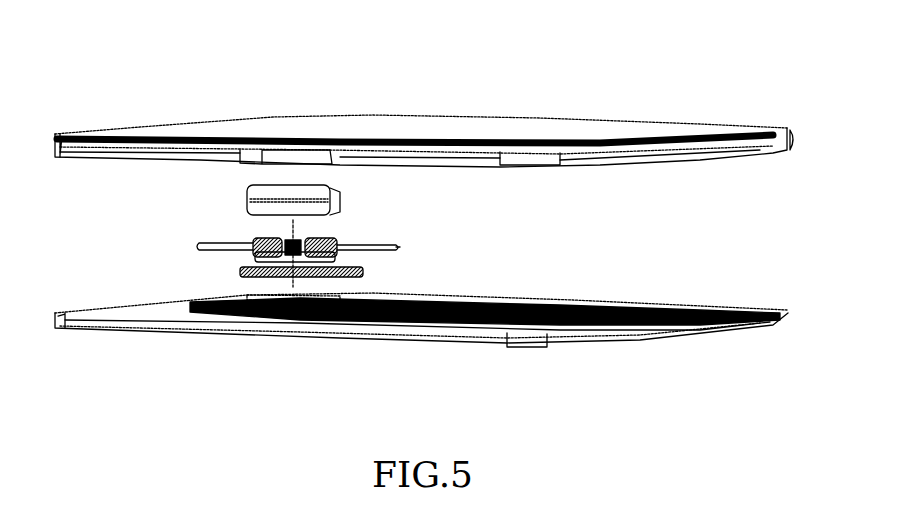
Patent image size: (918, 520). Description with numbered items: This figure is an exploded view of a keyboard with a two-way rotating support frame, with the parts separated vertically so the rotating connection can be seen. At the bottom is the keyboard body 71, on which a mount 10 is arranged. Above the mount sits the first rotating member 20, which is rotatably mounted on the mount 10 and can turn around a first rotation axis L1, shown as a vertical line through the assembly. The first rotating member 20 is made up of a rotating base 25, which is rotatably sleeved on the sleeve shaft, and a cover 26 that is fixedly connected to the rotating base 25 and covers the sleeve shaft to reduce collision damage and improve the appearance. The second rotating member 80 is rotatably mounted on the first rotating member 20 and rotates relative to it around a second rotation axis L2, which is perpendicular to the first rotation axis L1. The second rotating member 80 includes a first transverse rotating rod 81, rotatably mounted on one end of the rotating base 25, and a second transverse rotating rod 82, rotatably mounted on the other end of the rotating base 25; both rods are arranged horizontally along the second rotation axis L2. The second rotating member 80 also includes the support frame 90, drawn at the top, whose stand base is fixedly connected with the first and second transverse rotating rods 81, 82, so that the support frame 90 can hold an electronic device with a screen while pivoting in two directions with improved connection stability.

The mount 10 is at (297, 272).
The first rotating member 20 is at (290, 156).
The rotating base 25 is at (290, 186).
The cover 26 is at (295, 195).
The keyboard body 71 is at (428, 335).
The second rotating member 80 is at (190, 252).
The first transverse rotating rod 81 is at (370, 248).
The second transverse rotating rod 82 is at (220, 241).
The support frame 90 is at (435, 157).
The first rotation axis L1 is at (308, 252).
The second rotation axis L2 is at (412, 252).